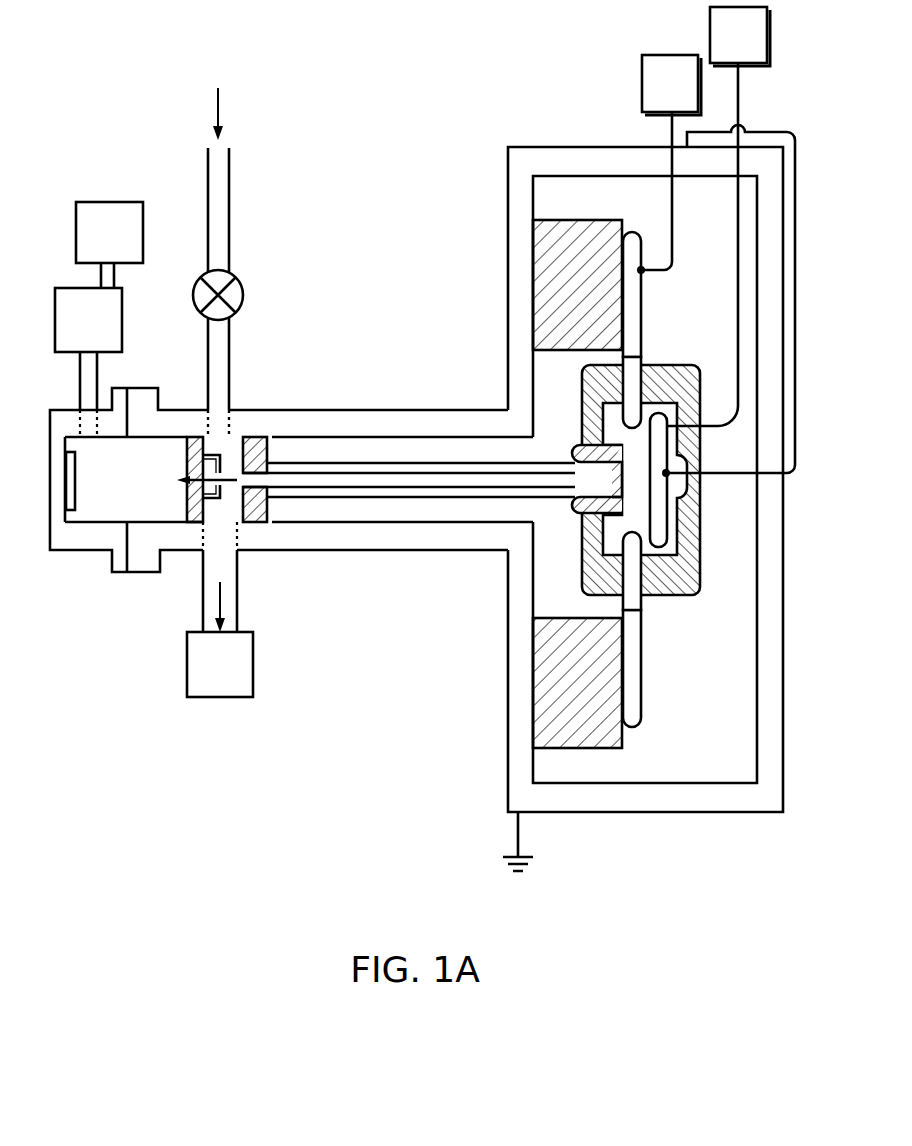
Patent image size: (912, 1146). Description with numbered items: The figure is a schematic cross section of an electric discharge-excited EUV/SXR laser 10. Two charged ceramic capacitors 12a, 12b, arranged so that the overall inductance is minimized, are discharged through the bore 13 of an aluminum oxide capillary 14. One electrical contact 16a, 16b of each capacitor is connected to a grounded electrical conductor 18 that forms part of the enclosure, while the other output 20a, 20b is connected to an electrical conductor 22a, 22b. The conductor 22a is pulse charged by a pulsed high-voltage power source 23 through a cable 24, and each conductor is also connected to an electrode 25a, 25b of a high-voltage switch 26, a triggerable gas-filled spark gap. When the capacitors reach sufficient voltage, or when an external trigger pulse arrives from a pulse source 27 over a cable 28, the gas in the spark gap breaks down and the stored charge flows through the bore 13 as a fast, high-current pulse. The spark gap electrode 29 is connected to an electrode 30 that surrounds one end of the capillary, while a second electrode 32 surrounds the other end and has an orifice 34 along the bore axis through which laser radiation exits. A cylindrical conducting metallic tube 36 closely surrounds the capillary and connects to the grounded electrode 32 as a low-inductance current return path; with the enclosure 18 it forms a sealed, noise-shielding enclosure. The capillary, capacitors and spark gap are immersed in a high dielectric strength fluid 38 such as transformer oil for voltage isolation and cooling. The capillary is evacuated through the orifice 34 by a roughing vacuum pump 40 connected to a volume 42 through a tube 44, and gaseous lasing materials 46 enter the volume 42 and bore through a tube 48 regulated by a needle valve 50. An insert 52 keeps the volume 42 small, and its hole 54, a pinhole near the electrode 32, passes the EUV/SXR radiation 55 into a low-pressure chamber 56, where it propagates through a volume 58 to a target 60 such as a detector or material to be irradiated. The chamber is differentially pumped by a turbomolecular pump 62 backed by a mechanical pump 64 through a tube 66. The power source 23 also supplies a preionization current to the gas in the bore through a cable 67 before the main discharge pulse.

The EUV/SXR laser 10 is at (428, 156).
The ceramic capacitor 12a is at (577, 267).
The ceramic capacitor 12b is at (566, 695).
The bore 13 is at (346, 473).
The capillary 14 is at (303, 463).
The electrical contact 16a is at (533, 228).
The electrical contact 16b is at (533, 645).
The grounded electrical conductor 18 is at (507, 348).
The output 20a is at (623, 218).
The output 20b is at (625, 730).
The electrical conductor 22a is at (640, 331).
The electrical conductor 22b is at (643, 680).
The pulsed high-voltage pulsed power source 23 is at (658, 96).
The cable 24 is at (667, 132).
The electrode 25a is at (640, 365).
The electrode 25b is at (637, 602).
The high-voltage switch 26 is at (708, 574).
The pulse source 27 is at (726, 48).
The cable 28 is at (742, 82).
The electrode 29 is at (633, 493).
The electrode 30 is at (575, 503).
The second electrode 32 is at (272, 522).
The orifice 34 is at (266, 440).
The cylindrical conducting metallic tube 36 is at (418, 433).
The high dielectric strength fluid 38 is at (548, 433).
The roughing vacuum pump 40 is at (208, 677).
The volume 42 is at (232, 416).
The tube 44 is at (203, 600).
The gaseous lasing materials 46 is at (218, 94).
The tube 48 is at (207, 368).
The needle valve 50 is at (243, 290).
The insert 52 is at (197, 552).
The hole 54 is at (212, 476).
The EUV/SXR radiation 55 is at (198, 486).
The chamber 56 is at (83, 552).
The volume 58 is at (106, 495).
The target 60 is at (73, 487).
The turbomolecular pump 62 is at (76, 333).
The mechanical pump 64 is at (98, 245).
The tube 66 is at (80, 392).
The cable 67 is at (797, 135).